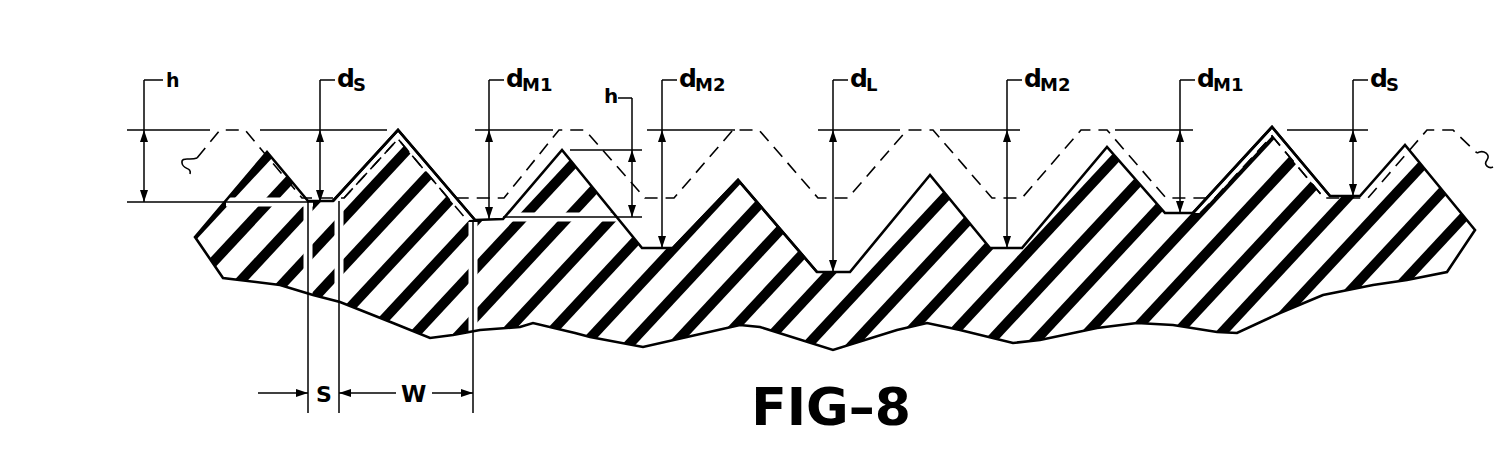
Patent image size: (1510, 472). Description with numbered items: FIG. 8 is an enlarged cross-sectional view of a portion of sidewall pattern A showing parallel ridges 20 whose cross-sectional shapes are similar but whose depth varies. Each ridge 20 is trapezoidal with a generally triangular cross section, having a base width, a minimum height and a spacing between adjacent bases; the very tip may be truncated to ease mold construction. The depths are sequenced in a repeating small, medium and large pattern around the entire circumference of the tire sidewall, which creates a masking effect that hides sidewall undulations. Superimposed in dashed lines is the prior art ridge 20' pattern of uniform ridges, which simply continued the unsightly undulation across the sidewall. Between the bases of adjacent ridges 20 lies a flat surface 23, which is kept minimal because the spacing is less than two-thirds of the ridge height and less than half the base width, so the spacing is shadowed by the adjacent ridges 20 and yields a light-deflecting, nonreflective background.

The ridge 20 is at (745, 159).
The prior art ridge 20' is at (404, 133).
The flat surface 23 is at (1343, 194).